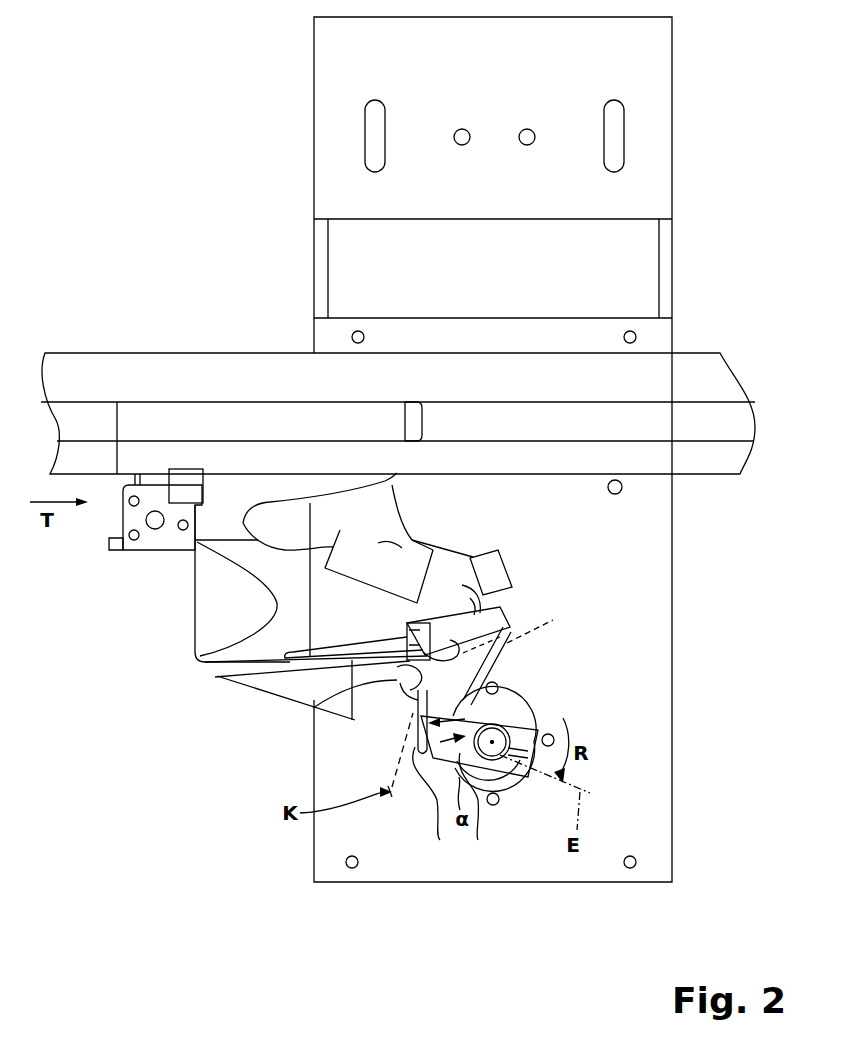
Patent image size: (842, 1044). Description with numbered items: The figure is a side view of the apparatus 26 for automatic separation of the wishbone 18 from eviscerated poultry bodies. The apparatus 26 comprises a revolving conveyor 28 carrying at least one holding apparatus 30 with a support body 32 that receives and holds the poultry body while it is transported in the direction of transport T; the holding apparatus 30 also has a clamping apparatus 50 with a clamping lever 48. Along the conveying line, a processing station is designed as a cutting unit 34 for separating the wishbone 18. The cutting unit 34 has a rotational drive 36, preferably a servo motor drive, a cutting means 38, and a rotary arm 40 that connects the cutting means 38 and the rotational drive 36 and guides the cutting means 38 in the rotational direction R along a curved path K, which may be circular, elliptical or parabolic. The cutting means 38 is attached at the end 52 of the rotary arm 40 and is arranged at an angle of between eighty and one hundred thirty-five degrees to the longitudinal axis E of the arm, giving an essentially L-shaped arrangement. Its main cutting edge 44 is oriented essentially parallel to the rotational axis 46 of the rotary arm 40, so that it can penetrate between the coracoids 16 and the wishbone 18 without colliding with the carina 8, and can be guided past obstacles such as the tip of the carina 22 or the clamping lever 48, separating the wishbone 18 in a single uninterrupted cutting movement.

The carina 8 is at (367, 712).
The coracoids 16 is at (512, 608).
The wishbone 18 is at (507, 643).
The tip of the carina 22 is at (407, 718).
The apparatus 26 is at (115, 695).
The revolving conveyor 28 is at (158, 372).
The holding apparatus 30 is at (148, 550).
The support body 32 is at (505, 557).
The cutting unit 34 is at (648, 840).
The rotational drive 36 is at (552, 707).
The cutting means 38 is at (422, 752).
The rotary arm 40 is at (478, 762).
The main cutting edge 44 is at (397, 684).
The rotational axis 46 is at (498, 760).
The clamping lever 48 is at (498, 652).
The clamping apparatus 50 is at (483, 590).
The end of the rotary arm 52 is at (500, 705).